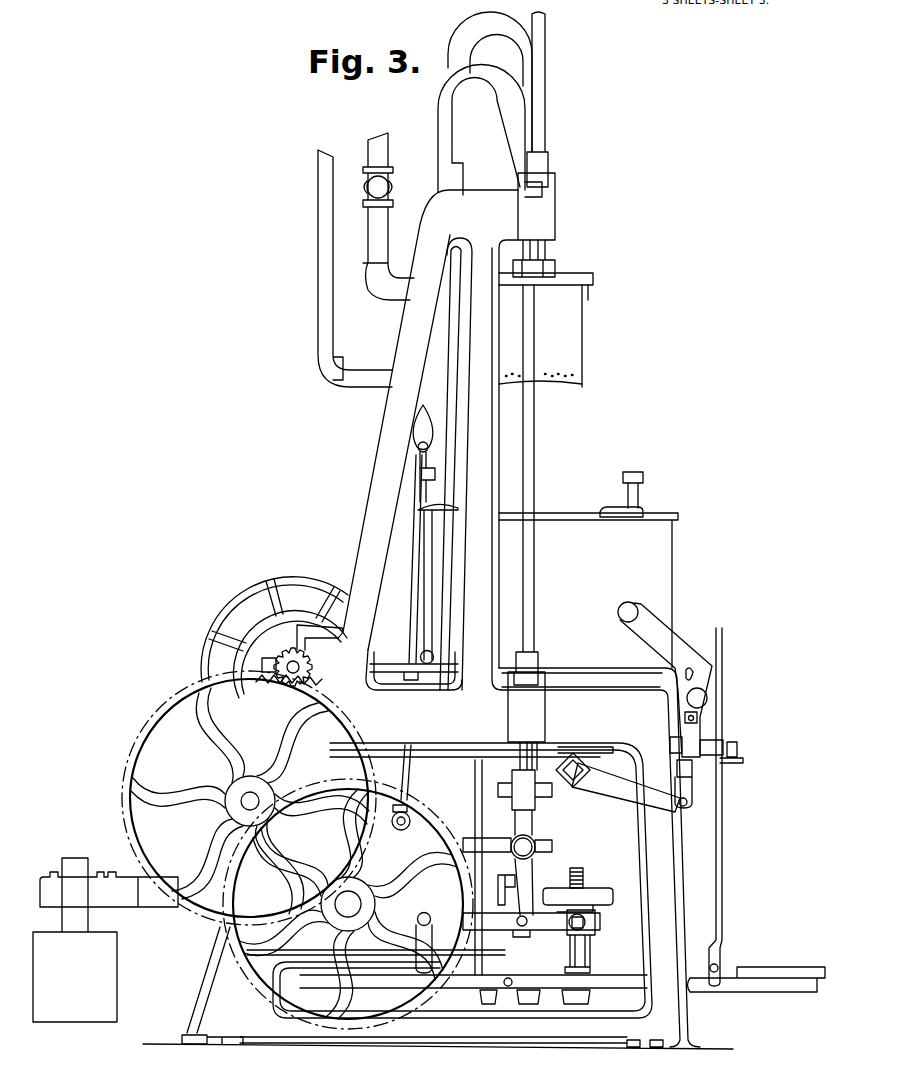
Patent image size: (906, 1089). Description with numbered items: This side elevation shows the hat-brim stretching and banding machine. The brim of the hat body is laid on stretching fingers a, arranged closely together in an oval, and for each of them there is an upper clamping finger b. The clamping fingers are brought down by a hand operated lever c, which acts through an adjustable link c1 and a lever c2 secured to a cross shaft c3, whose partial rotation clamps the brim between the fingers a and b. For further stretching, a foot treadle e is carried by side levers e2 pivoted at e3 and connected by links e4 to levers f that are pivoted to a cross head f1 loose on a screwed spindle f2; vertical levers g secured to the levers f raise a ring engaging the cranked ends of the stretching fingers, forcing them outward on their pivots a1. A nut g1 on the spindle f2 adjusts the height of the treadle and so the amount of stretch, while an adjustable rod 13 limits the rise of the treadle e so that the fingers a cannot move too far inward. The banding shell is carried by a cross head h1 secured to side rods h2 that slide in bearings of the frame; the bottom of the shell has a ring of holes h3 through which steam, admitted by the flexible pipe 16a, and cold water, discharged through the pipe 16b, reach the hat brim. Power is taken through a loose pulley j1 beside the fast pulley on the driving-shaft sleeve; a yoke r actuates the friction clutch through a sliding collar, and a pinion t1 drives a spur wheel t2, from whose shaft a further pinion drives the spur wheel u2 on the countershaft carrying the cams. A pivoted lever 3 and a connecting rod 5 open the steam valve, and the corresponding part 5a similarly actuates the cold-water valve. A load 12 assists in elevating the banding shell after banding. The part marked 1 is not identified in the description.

The pipe 16b is at (466, 32).
The flexible pipe 16a is at (512, 117).
The cross head h1 is at (577, 312).
The ring of holes h3 is at (572, 377).
The side rods h2 is at (534, 467).
The stretching fingers a is at (618, 493).
The upper clamping fingers b is at (637, 472).
The hand operated lever c is at (643, 625).
The adjustable link c1 is at (683, 733).
The lever c2 is at (618, 788).
The cross shaft c3 is at (577, 780).
The adjustable rod 13 is at (722, 823).
The vertical levers g is at (525, 870).
The screwed spindle f2 is at (620, 878).
The nut g1 is at (603, 893).
The cross head f1 is at (596, 918).
The levers f is at (493, 915).
The side levers e2 is at (643, 977).
The pivot e3 is at (508, 987).
The foot treadle e is at (798, 953).
The load 12 is at (102, 967).
The spur wheel t2 is at (148, 737).
The spur wheel u2 is at (430, 805).
The loose pulley j1 is at (273, 570).
The yoke r is at (265, 705).
The pinion t1 is at (312, 663).
The rack 1 is at (310, 682).
The connecting rod 5 is at (407, 623).
The pivots a1 is at (430, 651).
The connecting rod 5a is at (452, 435).
The pivoted lever 3 is at (378, 810).
The links e4 is at (422, 935).